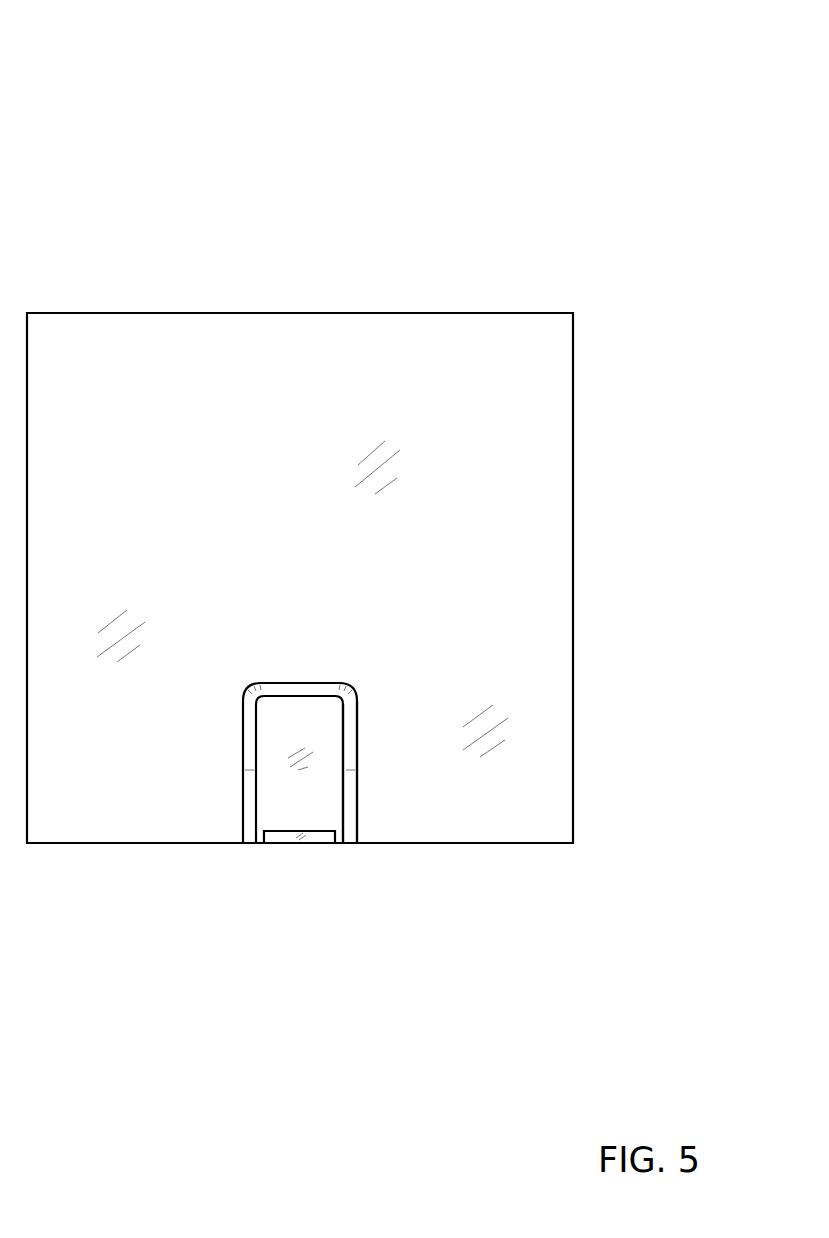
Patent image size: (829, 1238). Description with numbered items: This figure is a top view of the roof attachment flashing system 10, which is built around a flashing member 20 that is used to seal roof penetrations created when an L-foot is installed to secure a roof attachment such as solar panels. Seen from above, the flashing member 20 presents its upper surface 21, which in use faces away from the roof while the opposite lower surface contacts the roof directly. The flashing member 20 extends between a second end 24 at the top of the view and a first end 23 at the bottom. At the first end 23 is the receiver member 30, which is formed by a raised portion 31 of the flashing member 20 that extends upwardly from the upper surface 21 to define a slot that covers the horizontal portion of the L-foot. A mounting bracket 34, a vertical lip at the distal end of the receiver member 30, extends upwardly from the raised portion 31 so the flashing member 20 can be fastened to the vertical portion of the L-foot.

The roof attachment flashing system 10 is at (562, 92).
The flashing member 20 is at (328, 310).
The upper surface 21 is at (430, 358).
The second end 24 is at (212, 313).
The first end 23 is at (507, 843).
The receiver member 30 is at (277, 724).
The raised portion 31 is at (352, 795).
The mounting bracket 34 is at (312, 838).